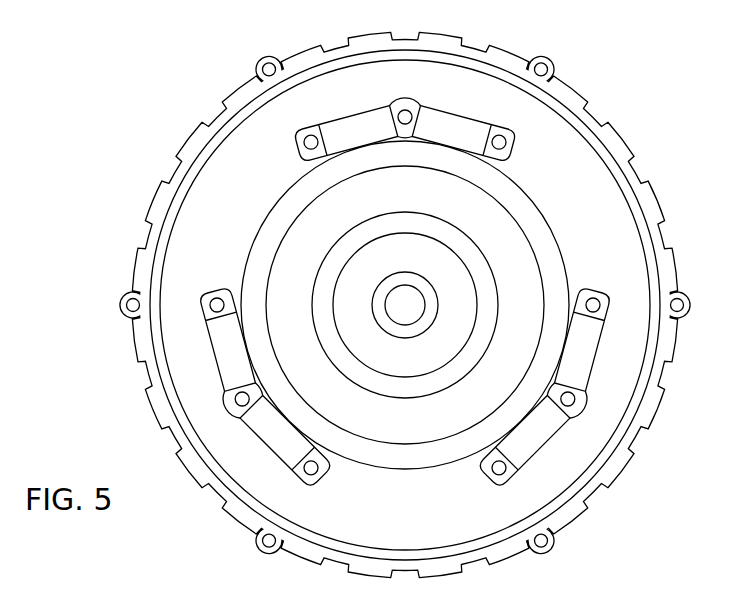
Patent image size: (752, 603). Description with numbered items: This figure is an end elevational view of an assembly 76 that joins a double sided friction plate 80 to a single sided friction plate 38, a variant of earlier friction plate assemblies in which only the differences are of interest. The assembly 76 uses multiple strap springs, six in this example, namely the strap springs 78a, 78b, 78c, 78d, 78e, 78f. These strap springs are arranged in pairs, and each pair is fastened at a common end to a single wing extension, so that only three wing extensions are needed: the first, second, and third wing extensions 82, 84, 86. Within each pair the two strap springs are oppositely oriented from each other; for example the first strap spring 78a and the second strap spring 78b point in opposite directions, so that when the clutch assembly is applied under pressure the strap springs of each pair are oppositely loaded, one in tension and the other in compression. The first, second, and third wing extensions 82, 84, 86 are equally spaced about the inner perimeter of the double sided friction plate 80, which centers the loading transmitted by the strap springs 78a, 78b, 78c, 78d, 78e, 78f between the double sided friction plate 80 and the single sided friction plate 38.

The assembly 76 is at (617, 73).
The single sided friction plate 38 is at (613, 140).
The first strap spring 78a is at (588, 343).
The second strap spring 78b is at (530, 434).
The strap spring 78c is at (282, 443).
The strap spring 78d is at (220, 345).
The strap spring 78e is at (347, 127).
The strap spring 78f is at (466, 127).
The double sided friction plate 80 is at (533, 434).
The first wing extension 82 is at (580, 413).
The second wing extension 84 is at (229, 402).
The third wing extension 86 is at (410, 100).